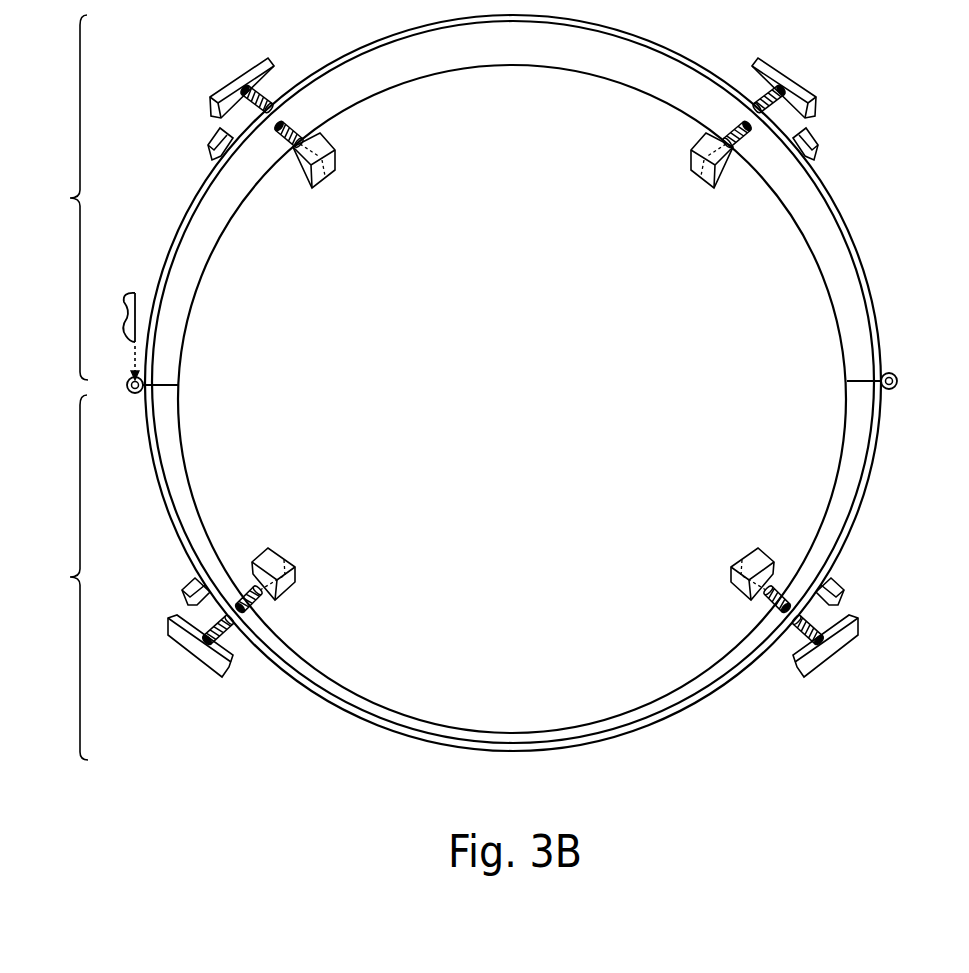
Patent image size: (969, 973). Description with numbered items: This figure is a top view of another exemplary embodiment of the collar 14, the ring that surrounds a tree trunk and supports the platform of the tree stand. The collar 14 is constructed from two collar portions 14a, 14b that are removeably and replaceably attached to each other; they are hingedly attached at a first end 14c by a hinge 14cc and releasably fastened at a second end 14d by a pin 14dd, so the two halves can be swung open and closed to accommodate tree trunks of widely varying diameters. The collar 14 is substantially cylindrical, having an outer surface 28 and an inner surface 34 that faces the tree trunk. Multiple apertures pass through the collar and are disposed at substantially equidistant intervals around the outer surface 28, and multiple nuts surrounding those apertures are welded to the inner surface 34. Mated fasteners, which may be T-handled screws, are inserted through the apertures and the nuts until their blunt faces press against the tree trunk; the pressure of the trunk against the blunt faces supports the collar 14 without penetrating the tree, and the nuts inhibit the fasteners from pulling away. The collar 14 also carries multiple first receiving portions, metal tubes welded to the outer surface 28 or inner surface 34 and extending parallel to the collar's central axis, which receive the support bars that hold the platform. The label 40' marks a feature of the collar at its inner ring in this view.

The collar 14 is at (291, 741).
The collar portion 14a is at (56, 197).
The collar portion 14b is at (56, 577).
The first end 14c is at (893, 390).
The hinge 14cc is at (893, 376).
The second end 14d is at (131, 393).
The pin 14dd is at (130, 296).
The outer surface 28 is at (862, 515).
The inner surface 34 is at (834, 515).
The ring slot 40' is at (512, 399).